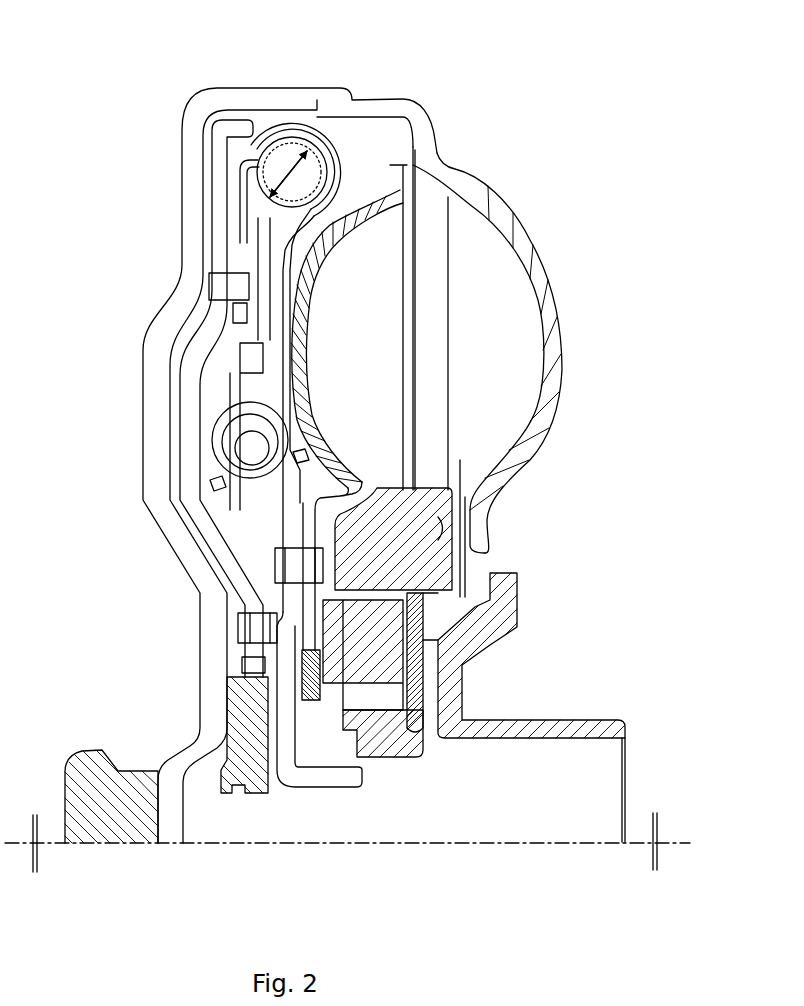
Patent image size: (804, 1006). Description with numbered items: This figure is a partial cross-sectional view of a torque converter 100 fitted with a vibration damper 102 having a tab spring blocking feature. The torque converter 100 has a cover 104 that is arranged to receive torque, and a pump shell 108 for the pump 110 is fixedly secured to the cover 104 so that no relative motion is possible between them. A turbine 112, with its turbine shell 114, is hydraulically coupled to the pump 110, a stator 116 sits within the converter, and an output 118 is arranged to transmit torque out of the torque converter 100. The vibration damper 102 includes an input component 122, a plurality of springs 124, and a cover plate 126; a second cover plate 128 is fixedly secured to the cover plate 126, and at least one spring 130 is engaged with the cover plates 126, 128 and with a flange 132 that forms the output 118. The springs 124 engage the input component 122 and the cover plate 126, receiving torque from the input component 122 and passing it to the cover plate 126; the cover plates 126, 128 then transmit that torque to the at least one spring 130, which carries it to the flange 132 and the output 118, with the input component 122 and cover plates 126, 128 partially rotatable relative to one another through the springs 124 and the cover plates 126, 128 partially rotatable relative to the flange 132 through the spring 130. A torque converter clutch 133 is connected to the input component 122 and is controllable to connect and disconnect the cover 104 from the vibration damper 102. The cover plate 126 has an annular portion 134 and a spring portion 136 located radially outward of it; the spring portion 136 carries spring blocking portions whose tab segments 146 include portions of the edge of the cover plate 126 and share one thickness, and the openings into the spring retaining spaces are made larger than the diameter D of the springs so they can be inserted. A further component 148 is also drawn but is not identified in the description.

The torque converter 100 is at (628, 78).
The vibration damper 102 is at (289, 116).
The cover 104 is at (143, 423).
The pump shell 108 is at (543, 255).
The pump 110 is at (518, 298).
The turbine 112 is at (408, 192).
The turbine shell 114 is at (330, 185).
The stator 116 is at (460, 548).
The output 118 is at (326, 795).
The input component 122 is at (286, 155).
The plurality of springs 124 is at (270, 158).
The cover plate 126 is at (301, 116).
The cover plate 128 is at (230, 233).
The spring 130 is at (240, 436).
The flange 132 is at (290, 468).
The torque converter clutch 133 is at (197, 217).
The annular portion 134 is at (300, 205).
The spring portion 136 is at (357, 181).
The tab segment 146 is at (393, 225).
The roller housing 148 is at (313, 122).
The diameter D is at (283, 296).